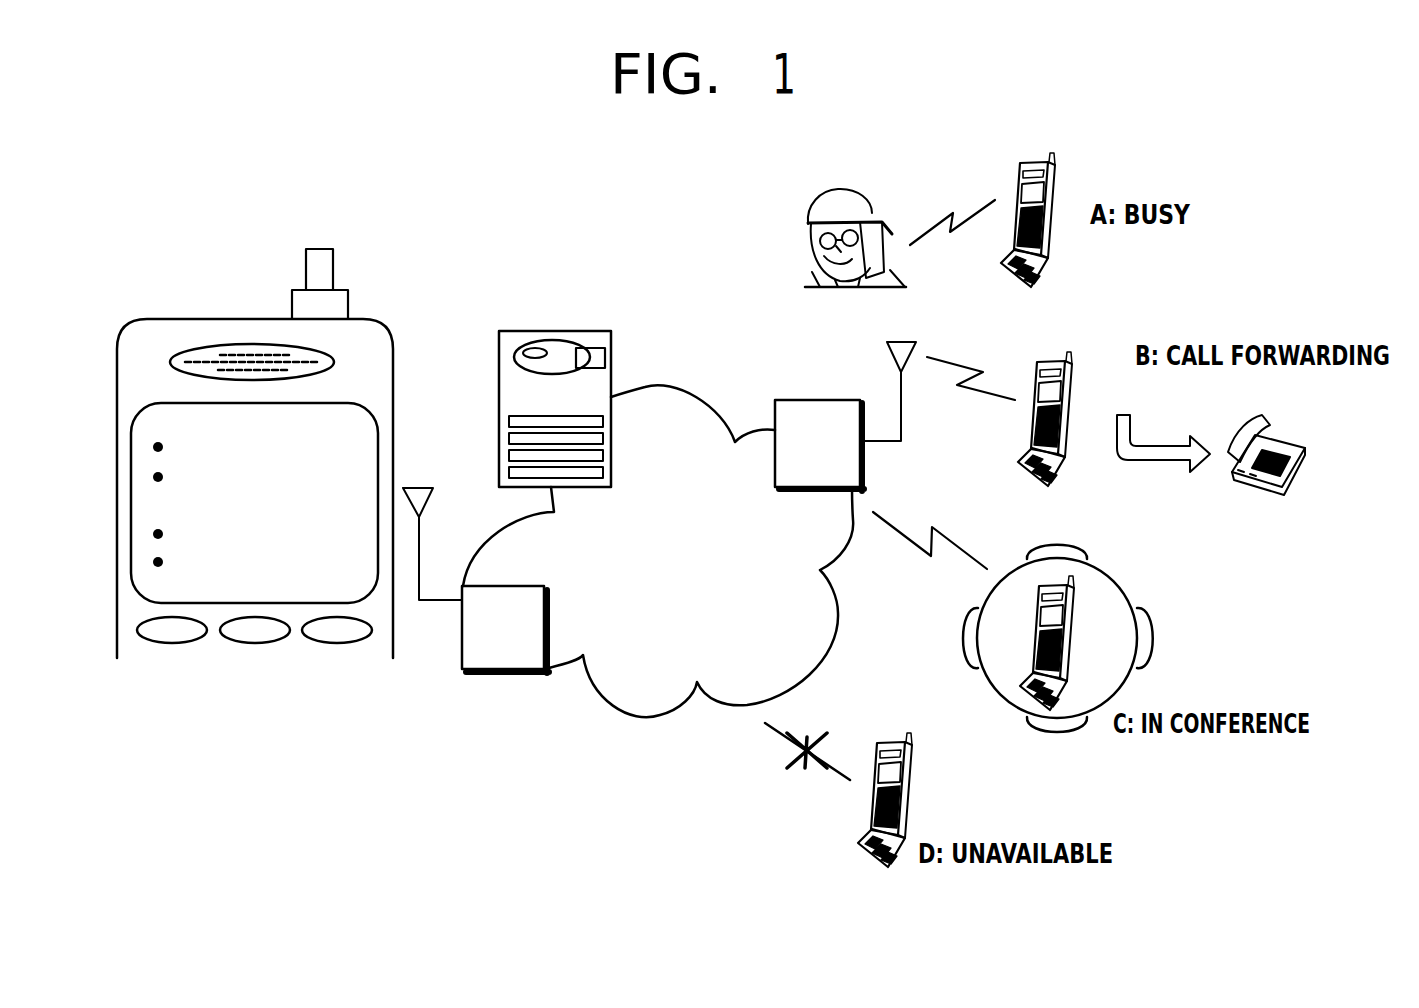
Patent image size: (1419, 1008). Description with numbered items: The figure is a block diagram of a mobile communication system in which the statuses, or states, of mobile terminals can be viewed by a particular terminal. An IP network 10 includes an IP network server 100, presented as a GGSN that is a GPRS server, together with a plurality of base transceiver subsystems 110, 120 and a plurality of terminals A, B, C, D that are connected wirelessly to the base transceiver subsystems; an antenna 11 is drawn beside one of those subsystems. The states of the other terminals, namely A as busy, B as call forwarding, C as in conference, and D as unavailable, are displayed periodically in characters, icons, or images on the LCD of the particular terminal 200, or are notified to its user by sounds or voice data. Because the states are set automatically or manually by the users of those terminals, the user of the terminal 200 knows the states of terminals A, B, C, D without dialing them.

The IP network 10 is at (625, 719).
The base station antenna 11 is at (428, 469).
The IP network server 100 is at (612, 351).
The base transceiver subsystem 110 is at (795, 400).
The base transceiver subsystem 120 is at (495, 590).
The particular terminal 200 is at (210, 319).